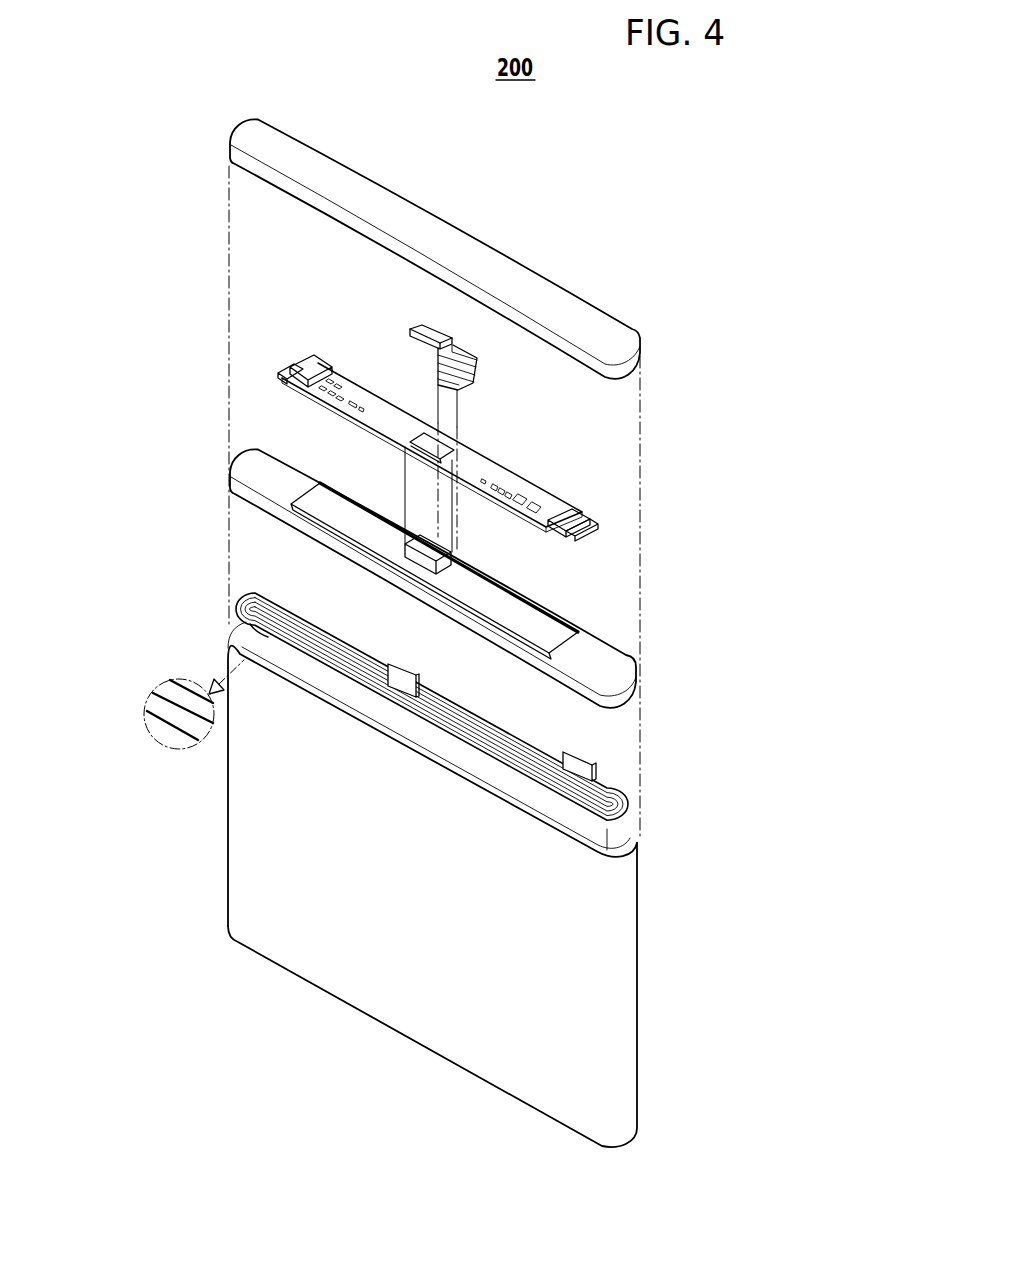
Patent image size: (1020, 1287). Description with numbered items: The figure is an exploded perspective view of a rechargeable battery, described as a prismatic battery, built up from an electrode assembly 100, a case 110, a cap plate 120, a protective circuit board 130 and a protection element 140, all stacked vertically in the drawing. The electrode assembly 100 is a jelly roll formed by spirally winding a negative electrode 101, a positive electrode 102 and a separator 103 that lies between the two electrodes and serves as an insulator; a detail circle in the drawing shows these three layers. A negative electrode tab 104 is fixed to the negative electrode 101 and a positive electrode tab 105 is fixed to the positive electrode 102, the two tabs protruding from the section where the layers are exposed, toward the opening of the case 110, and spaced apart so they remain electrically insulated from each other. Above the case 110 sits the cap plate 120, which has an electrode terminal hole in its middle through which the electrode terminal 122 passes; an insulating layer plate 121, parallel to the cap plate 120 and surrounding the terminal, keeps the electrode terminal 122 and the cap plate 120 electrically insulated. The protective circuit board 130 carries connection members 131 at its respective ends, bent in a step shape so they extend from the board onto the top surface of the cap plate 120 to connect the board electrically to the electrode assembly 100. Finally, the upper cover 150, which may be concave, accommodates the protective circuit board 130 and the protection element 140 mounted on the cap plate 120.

The upper cover 150 is at (600, 318).
The protection element 140 is at (395, 324).
The connection member 131 is at (290, 363).
The protective circuit board 130 is at (590, 513).
The electrode terminal 122 is at (508, 558).
The insulating layer plate 121 is at (558, 628).
The cap plate 120 is at (623, 667).
The case 110 is at (622, 990).
The electrode assembly 100 is at (382, 706).
The negative electrode 101 is at (168, 681).
The positive electrode 102 is at (144, 723).
The separator 103 is at (163, 693).
The negative electrode tab 104 is at (432, 688).
The positive electrode tab 105 is at (585, 775).